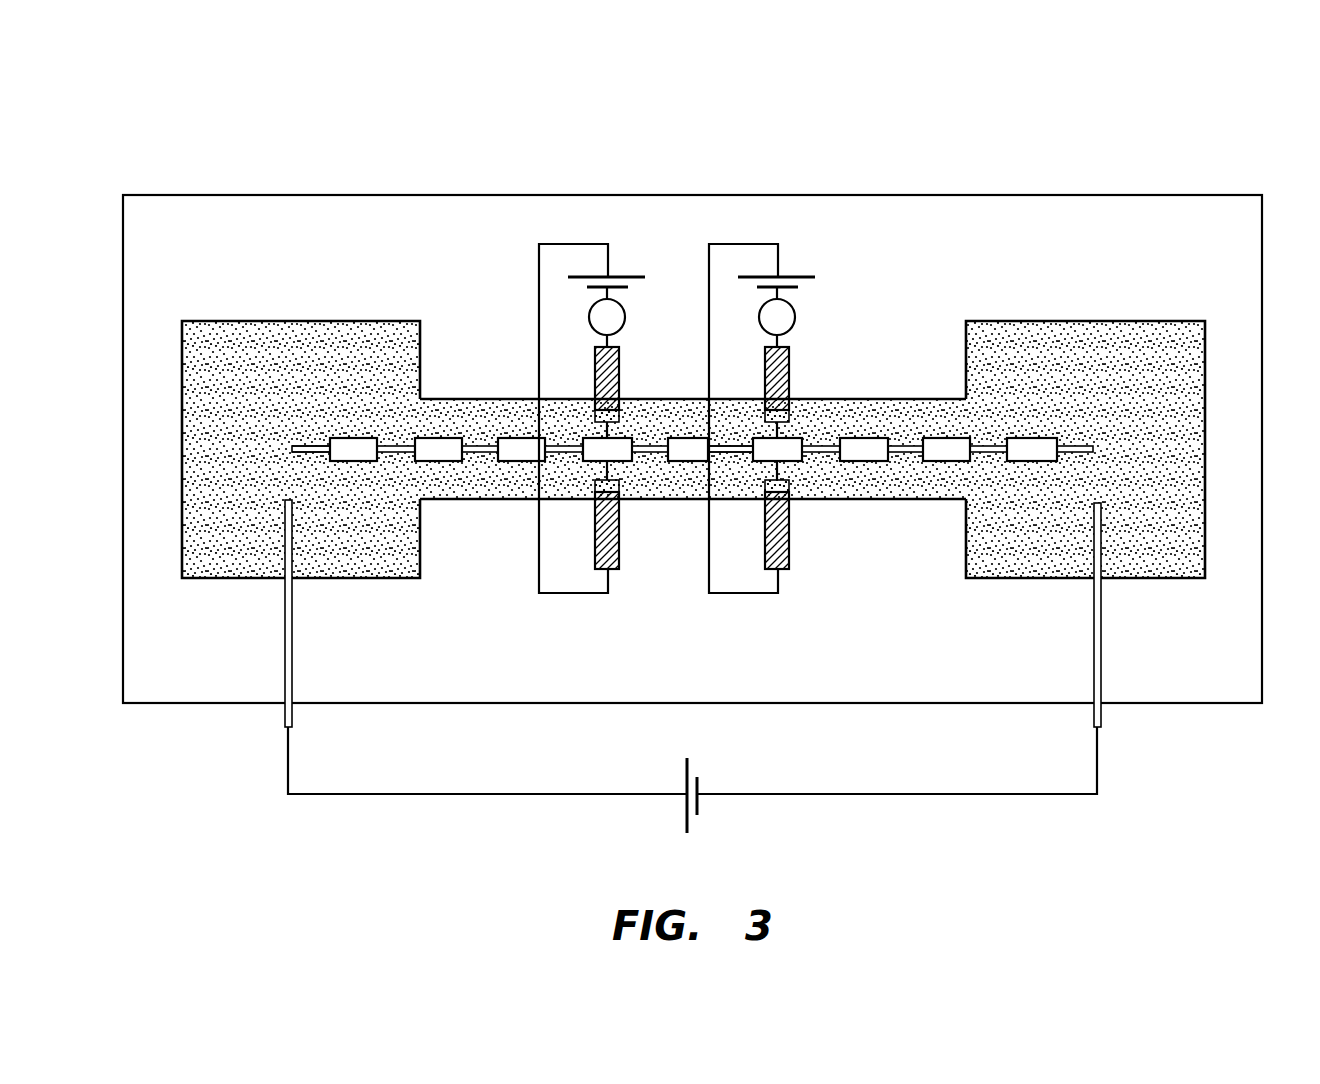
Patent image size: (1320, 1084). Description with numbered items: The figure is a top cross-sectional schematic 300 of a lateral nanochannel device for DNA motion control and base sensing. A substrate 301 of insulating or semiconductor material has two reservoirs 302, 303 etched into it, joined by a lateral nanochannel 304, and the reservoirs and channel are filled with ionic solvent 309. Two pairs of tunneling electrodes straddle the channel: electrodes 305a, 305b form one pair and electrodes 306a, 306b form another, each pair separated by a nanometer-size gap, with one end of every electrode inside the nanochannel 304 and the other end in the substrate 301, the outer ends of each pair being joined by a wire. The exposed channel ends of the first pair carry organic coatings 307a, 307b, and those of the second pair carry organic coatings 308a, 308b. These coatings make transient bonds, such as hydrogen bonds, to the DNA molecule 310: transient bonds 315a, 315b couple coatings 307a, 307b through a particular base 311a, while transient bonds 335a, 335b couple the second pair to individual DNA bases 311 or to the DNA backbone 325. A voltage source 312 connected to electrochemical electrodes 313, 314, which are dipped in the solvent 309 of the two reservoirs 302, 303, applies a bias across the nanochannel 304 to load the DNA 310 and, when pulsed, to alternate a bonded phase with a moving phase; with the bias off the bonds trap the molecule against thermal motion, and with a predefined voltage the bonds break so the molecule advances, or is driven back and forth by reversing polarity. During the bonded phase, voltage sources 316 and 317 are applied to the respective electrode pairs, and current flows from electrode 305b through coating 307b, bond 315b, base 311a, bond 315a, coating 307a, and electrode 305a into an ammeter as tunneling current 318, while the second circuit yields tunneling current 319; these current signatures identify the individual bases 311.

The schematic 300 is at (1219, 123).
The substrate 301 is at (163, 228).
The reservoir 302 is at (234, 330).
The reservoir 303 is at (1151, 330).
The lateral nanochannel 304 is at (940, 414).
The electrode 305a is at (592, 368).
The electrode 305b is at (619, 578).
The electrode 306a is at (762, 368).
The electrode 306b is at (787, 578).
The organic coating 307a is at (624, 411).
The organic coating 307b is at (591, 488).
The organic coating 308a is at (794, 411).
The organic coating 308b is at (792, 487).
The ionic solvent 309 is at (1175, 463).
The DNA molecule 310 is at (289, 447).
The DNA base 311 is at (519, 440).
The base 311a is at (621, 459).
The voltage source 312 is at (685, 827).
The electrochemical electrode 313 is at (282, 712).
The electrochemical electrode 314 is at (1104, 712).
The transient bond 315a is at (612, 430).
The transient bond 315b is at (606, 471).
The voltage source 316 is at (631, 275).
The voltage source 317 is at (801, 275).
The tunneling current 318 is at (626, 318).
The tunneling current 319 is at (796, 318).
The DNA backbone 325 is at (731, 452).
The transient bond 335a is at (783, 428).
The transient bond 335b is at (791, 473).